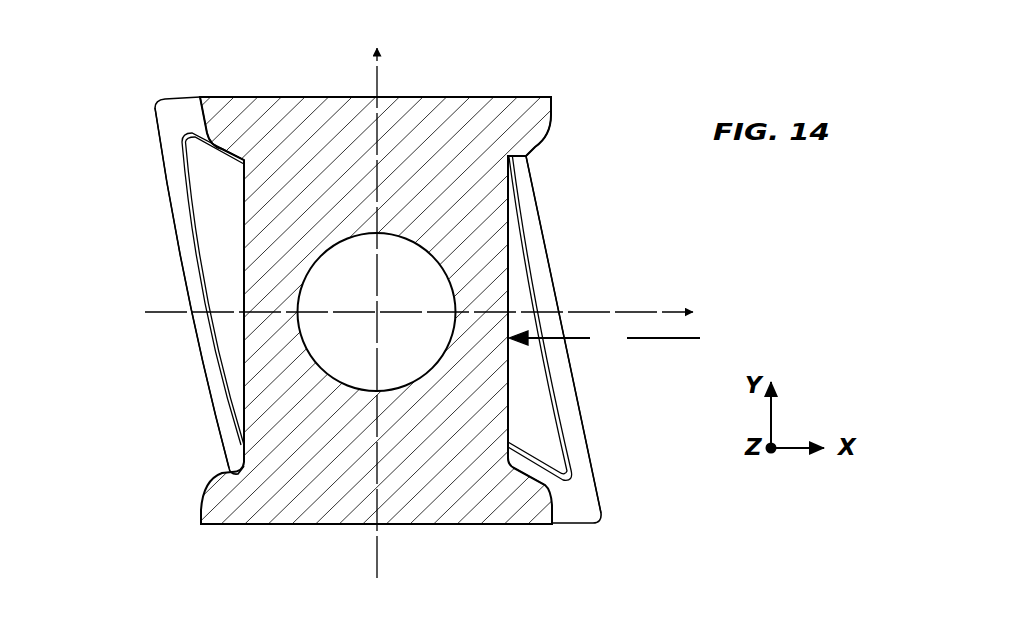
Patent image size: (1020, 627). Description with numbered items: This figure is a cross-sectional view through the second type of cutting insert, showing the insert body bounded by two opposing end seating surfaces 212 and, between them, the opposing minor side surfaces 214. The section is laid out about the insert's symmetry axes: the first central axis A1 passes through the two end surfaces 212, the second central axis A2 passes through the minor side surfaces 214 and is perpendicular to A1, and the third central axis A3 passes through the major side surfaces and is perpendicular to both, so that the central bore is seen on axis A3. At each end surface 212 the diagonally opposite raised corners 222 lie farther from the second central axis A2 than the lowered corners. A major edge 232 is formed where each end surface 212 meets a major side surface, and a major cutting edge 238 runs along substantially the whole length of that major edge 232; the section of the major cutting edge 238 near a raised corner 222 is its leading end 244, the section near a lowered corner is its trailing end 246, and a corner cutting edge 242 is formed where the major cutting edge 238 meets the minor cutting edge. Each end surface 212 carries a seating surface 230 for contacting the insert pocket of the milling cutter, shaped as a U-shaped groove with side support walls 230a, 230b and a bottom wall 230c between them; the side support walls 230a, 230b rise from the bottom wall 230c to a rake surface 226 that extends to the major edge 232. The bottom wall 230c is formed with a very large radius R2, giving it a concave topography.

The end seating surface 212 is at (510, 311).
The minor side surface 214 is at (427, 86).
The raised corner 222 is at (381, 311).
The corner cutting edge 242 is at (153, 107).
The leading end 244 is at (160, 166).
The rake surface 226 is at (220, 386).
The trailing end 246 is at (213, 423).
The major cutting edge 238 is at (177, 236).
The seating surface 230 is at (385, 309).
The side support wall 230a is at (537, 430).
The side support wall 230b is at (215, 207).
The bottom wall 230c is at (240, 277).
The major edge 232 is at (163, 294).
The first central axis A1 is at (376, 298).
The second central axis A2 is at (435, 312).
The third central axis A3 is at (376, 310).
The radius R2 is at (604, 338).